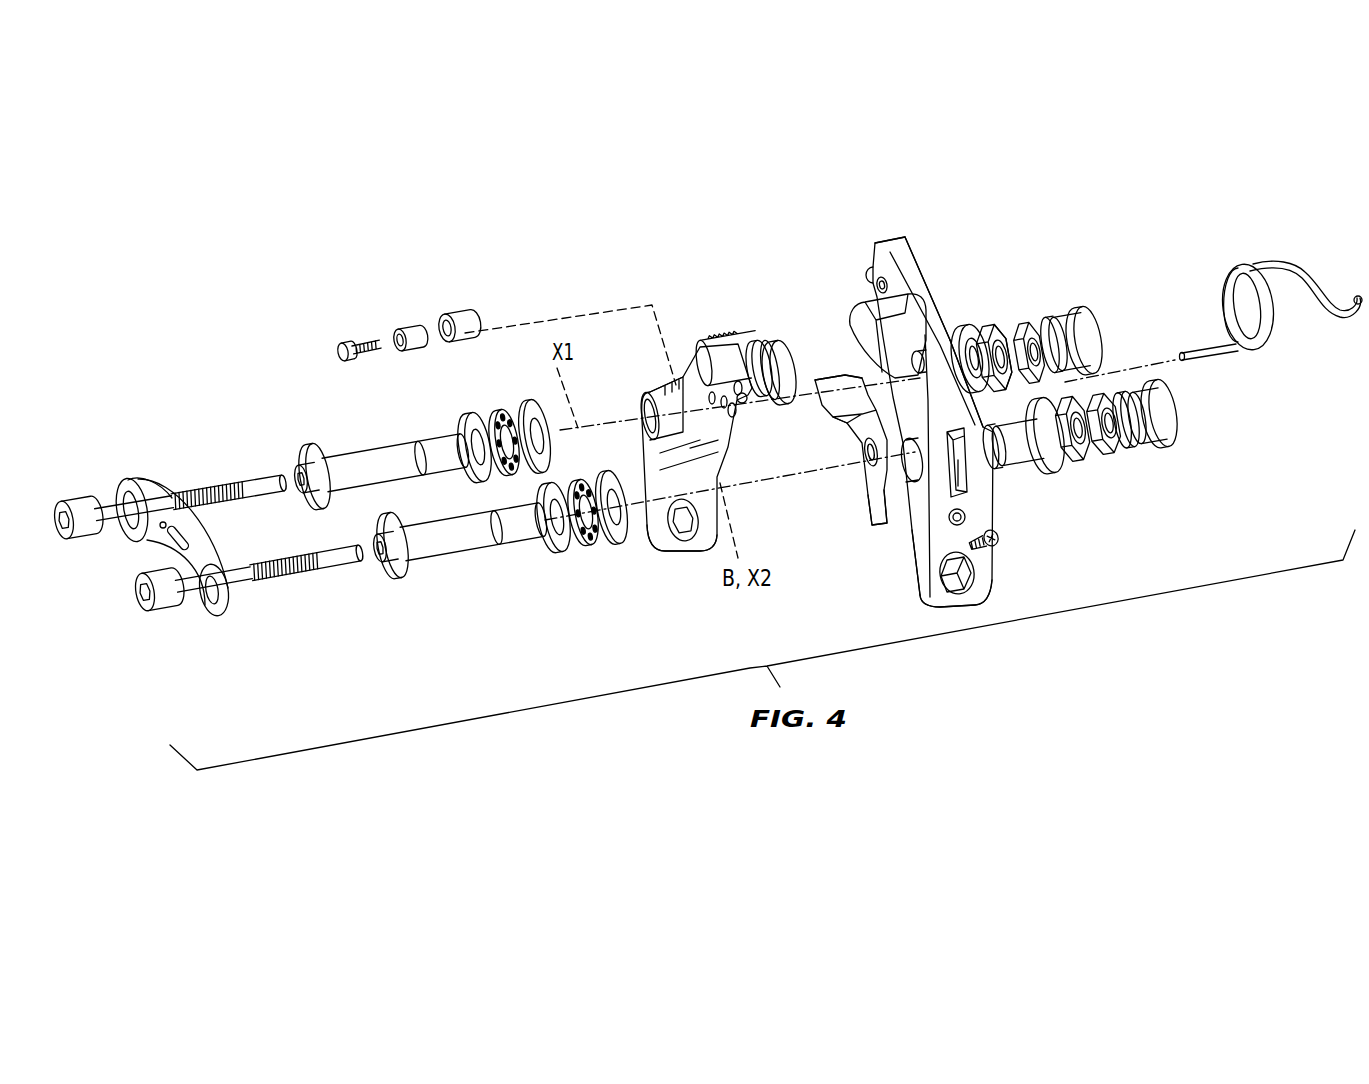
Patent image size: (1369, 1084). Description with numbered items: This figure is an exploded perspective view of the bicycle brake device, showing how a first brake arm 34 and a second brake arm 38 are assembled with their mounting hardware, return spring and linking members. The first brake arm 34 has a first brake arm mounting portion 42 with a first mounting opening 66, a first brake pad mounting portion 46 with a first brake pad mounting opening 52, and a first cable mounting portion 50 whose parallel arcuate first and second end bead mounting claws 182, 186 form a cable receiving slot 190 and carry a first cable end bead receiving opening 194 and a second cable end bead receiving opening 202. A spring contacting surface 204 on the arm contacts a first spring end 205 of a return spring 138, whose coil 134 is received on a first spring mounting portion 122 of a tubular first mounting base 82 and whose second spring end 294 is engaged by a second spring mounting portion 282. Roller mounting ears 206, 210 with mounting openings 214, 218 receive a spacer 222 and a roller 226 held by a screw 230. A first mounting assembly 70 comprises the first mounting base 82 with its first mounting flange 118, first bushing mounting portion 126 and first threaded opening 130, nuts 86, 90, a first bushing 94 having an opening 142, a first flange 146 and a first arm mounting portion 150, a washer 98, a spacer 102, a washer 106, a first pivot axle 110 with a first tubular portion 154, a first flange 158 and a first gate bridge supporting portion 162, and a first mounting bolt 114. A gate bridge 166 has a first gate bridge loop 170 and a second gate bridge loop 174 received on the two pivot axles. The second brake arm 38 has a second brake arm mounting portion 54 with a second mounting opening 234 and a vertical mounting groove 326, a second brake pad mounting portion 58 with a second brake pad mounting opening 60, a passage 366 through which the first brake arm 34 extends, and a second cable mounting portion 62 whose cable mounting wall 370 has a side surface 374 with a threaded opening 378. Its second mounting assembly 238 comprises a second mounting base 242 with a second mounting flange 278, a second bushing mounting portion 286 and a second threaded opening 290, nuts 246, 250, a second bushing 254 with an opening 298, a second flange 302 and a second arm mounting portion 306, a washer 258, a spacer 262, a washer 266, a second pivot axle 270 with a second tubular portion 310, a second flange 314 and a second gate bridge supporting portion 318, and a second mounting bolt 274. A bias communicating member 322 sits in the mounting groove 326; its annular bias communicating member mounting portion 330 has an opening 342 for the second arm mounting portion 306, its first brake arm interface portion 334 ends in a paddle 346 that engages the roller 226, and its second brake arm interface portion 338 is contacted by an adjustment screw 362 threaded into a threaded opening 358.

The first brake arm 34 is at (685, 302).
The second brake arm 38 is at (832, 252).
The first brake arm mounting portion 42 is at (637, 387).
The first brake pad mounting portion 46 is at (660, 560).
The first cable mounting portion 50 is at (747, 330).
The first brake pad mounting opening 52 is at (680, 533).
The second brake arm mounting portion 54 is at (901, 520).
The second brake pad mounting portion 58 is at (917, 595).
The second brake pad mounting opening 60 is at (955, 583).
The second cable mounting portion 62 is at (915, 228).
The first mounting opening 66 is at (650, 412).
The first mounting assembly 70 is at (184, 421).
The first mounting base 82 is at (1068, 286).
The nut 86 is at (1032, 322).
The nut 90 is at (996, 323).
The first bushing 94 is at (984, 400).
The washer 98 is at (530, 413).
The spacer 102 is at (503, 413).
The washer 106 is at (477, 420).
The first pivot axle 110 is at (330, 432).
The first mounting bolt 114 is at (58, 503).
The first mounting flange 118 is at (1094, 308).
The first spring mounting portion 122 is at (1080, 337).
The first bushing mounting portion 126 is at (1050, 318).
The first threaded opening 130 is at (1022, 320).
The coil 134 is at (1267, 340).
The return spring 138 is at (1248, 240).
The opening 142 is at (912, 366).
The first flange 146 is at (970, 327).
The first arm mounting portion 150 is at (964, 340).
The first tubular portion 154 is at (377, 457).
The first flange 158 is at (310, 450).
The first gate bridge supporting portion 162 is at (300, 470).
The gate bridge 166 is at (207, 527).
The first gate bridge loop 170 is at (130, 478).
The second gate bridge loop 174 is at (212, 615).
The first end bead mounting claw 182 is at (737, 350).
The second end bead mounting claw 186 is at (772, 357).
The cable receiving slot 190 is at (762, 343).
The first cable end bead receiving opening 194 is at (737, 380).
The second cable end bead receiving opening 202 is at (783, 372).
The spring contacting surface 204 is at (710, 455).
The first spring end 205 is at (1190, 355).
The roller mounting ear 206 is at (708, 397).
The roller mounting ear 210 is at (743, 397).
The mounting opening 214 is at (723, 403).
The mounting opening 218 is at (723, 410).
The spacer 222 is at (397, 337).
The roller 226 is at (448, 322).
The screw 230 is at (345, 342).
The second mounting opening 234 is at (905, 468).
The second mounting assembly 238 is at (282, 630).
The second mounting base 242 is at (1180, 437).
The nut 246 is at (1106, 440).
The nut 250 is at (1075, 462).
The second bushing 254 is at (1018, 467).
The washer 258 is at (612, 550).
The spacer 262 is at (587, 553).
The washer 266 is at (553, 553).
The second pivot axle 270 is at (437, 577).
The second mounting bolt 274 is at (130, 607).
The second mounting flange 278 is at (1177, 420).
The second spring mounting portion 282 is at (1134, 437).
The second bushing mounting portion 286 is at (1142, 438).
The second threaded opening 290 is at (1104, 433).
The second spring end 294 is at (1318, 283).
The opening 298 is at (993, 428).
The second flange 302 is at (1028, 443).
The second arm mounting portion 306 is at (1045, 472).
The second tubular portion 310 is at (463, 550).
The second flange 314 is at (397, 580).
The second gate bridge supporting portion 318 is at (377, 540).
The bias communicating member 322 is at (834, 497).
The mounting groove 326 is at (941, 430).
The bias communicating member mounting portion 330 is at (858, 478).
The first brake arm interface portion 334 is at (843, 427).
The second brake arm interface portion 338 is at (870, 523).
The opening 342 is at (864, 460).
The paddle 346 is at (837, 397).
The threaded opening 358 is at (960, 525).
The adjustment screw 362 is at (997, 535).
The passage 366 is at (890, 308).
The cable mounting wall 370 is at (885, 245).
The side surface 374 is at (866, 270).
The threaded opening 378 is at (877, 285).